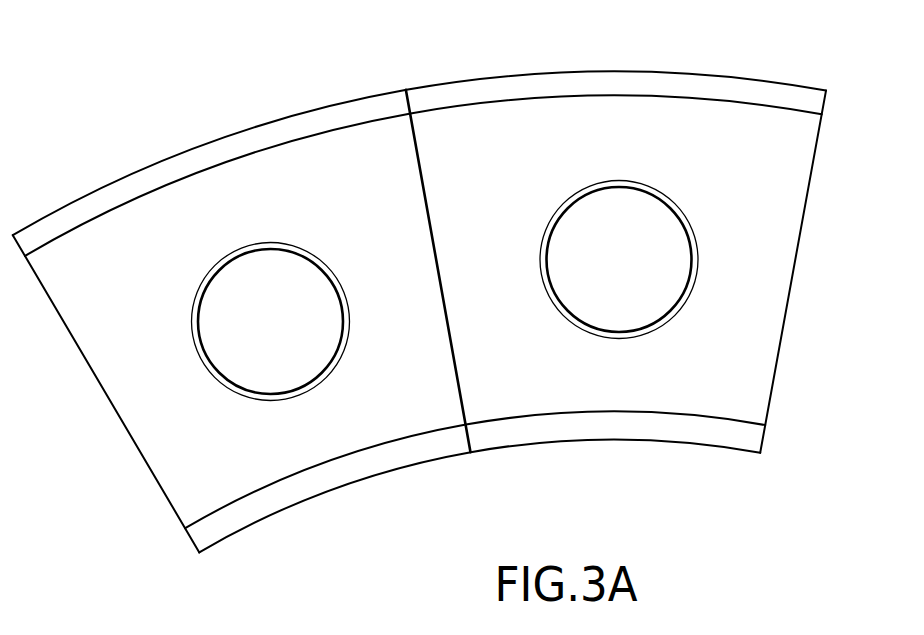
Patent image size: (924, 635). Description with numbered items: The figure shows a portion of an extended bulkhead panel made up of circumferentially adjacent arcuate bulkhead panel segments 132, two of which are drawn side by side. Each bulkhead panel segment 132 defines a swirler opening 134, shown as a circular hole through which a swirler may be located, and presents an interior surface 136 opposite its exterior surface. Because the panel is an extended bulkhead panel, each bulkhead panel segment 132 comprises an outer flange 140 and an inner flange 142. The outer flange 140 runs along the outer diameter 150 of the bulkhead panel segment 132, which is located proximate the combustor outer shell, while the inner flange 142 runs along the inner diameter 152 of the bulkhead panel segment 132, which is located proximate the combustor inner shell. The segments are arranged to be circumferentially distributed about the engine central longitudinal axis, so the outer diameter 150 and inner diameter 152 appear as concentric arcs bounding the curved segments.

The bulkhead panel segment 132 is at (90, 348).
The swirler opening 134 is at (306, 288).
The interior surface 136 is at (222, 215).
The outer flange 140 is at (237, 148).
The inner flange 142 is at (390, 450).
The outer diameter 150 is at (127, 174).
The inner diameter 152 is at (323, 493).